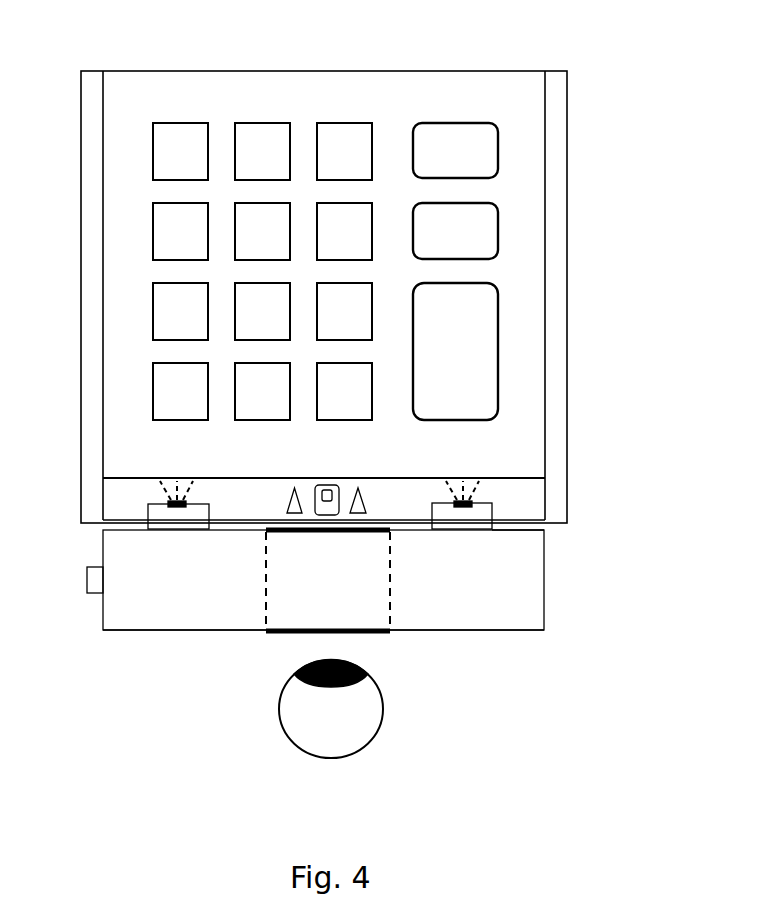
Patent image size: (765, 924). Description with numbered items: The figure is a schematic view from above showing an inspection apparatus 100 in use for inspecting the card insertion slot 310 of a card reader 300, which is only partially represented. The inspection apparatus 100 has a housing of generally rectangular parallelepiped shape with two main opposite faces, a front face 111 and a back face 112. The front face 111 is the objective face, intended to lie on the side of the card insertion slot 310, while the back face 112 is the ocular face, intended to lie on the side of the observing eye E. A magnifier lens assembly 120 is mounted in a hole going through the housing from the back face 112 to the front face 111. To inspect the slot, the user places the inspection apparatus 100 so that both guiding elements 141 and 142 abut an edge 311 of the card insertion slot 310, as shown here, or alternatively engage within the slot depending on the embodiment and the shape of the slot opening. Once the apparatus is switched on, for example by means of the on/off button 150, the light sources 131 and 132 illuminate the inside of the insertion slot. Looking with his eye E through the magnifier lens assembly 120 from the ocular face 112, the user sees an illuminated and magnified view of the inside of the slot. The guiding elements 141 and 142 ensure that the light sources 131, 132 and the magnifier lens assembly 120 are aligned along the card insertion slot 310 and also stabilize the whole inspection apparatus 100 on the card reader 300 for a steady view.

The card reader 300 is at (150, 70).
The card insertion slot 310 is at (525, 478).
The edge of the card insertion slot 311 is at (517, 497).
The inspection apparatus 100 is at (103, 608).
The front face 111 is at (530, 530).
The back face 112 is at (415, 632).
The on/off button 150 is at (95, 581).
The magnifier lens assembly 120 is at (280, 618).
The guiding element 142 is at (198, 524).
The light source 132 is at (176, 507).
The guiding element 141 is at (449, 522).
The light source 131 is at (465, 508).
The eye E is at (349, 745).